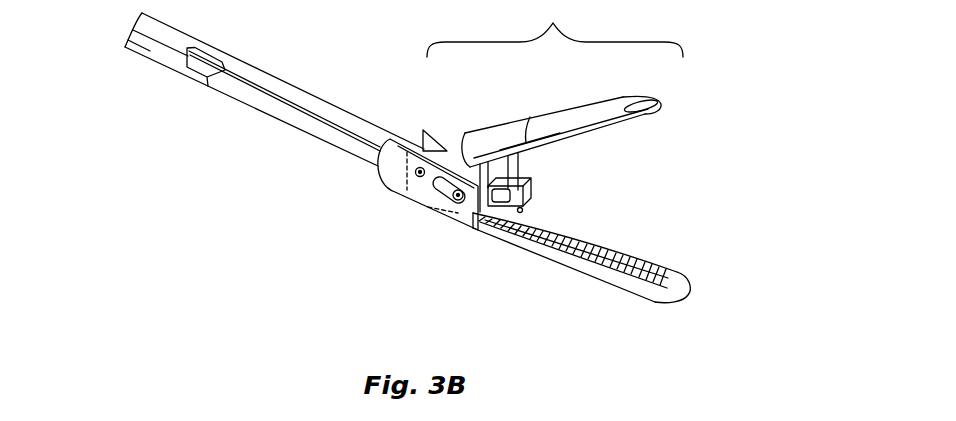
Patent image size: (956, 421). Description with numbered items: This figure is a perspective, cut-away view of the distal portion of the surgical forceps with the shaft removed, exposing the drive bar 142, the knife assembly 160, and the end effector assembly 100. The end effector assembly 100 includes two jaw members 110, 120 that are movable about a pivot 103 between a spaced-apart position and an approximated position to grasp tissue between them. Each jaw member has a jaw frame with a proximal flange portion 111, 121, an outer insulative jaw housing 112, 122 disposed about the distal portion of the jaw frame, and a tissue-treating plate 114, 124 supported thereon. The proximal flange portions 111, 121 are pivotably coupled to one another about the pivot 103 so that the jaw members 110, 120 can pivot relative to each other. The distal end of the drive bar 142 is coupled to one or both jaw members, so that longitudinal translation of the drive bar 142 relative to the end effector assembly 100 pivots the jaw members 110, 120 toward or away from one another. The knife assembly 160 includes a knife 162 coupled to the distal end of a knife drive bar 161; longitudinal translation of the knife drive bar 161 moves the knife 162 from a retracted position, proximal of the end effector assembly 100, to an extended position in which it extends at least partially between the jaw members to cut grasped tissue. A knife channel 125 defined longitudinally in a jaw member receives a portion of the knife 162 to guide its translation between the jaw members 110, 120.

The end effector assembly 100 is at (555, 28).
The pivot 103 is at (428, 222).
The jaw member 110 is at (611, 129).
The proximal flange portion 111 is at (449, 146).
The outer insulative jaw housing 112 is at (556, 114).
The tissue-treating plate 114 is at (595, 139).
The jaw member 120 is at (635, 278).
The proximal flange portion 121 is at (445, 203).
The outer insulative jaw housing 122 is at (689, 301).
The tissue-treating plate 124 is at (552, 213).
The knife channel 125 is at (573, 230).
The drive bar 142 is at (274, 118).
The knife assembly 160 is at (226, 103).
The knife drive bar 161 is at (152, 53).
The knife 162 is at (302, 122).